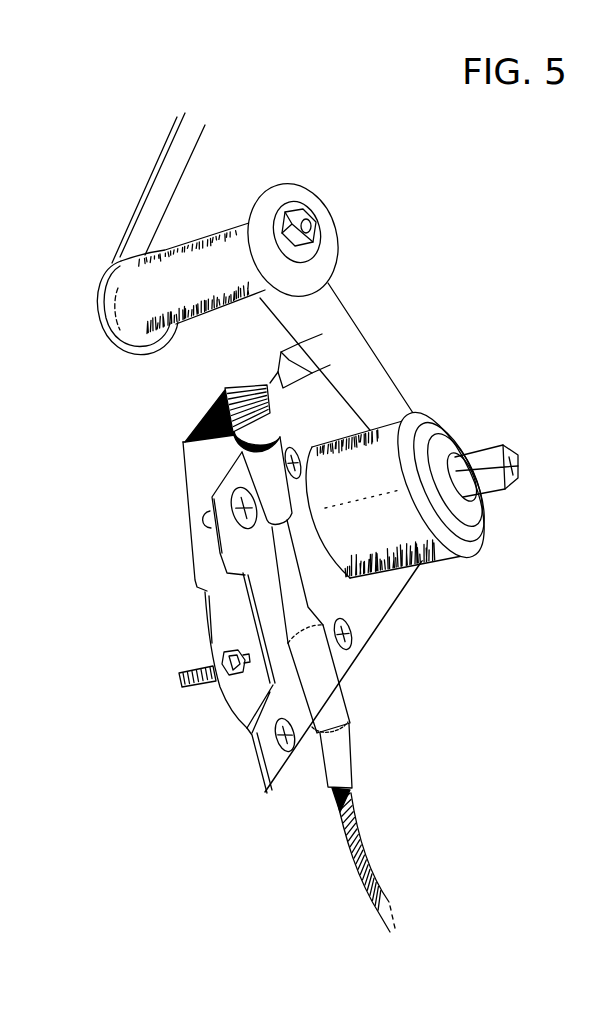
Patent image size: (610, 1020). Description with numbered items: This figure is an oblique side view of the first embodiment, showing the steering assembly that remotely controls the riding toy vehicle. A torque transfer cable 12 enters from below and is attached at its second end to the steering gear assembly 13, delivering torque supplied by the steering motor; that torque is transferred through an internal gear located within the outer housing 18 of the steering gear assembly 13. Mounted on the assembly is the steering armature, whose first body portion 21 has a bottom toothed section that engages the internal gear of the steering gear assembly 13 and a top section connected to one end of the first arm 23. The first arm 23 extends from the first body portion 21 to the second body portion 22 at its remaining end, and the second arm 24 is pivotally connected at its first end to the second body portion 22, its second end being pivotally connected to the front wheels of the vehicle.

The torque transfer cable 12 is at (367, 847).
The steering gear assembly 13 is at (362, 633).
The outer housing 18 is at (380, 594).
The first body portion 21 is at (383, 483).
The second body portion 22 is at (171, 297).
The first arm 23 is at (330, 330).
The second arm 24 is at (162, 184).